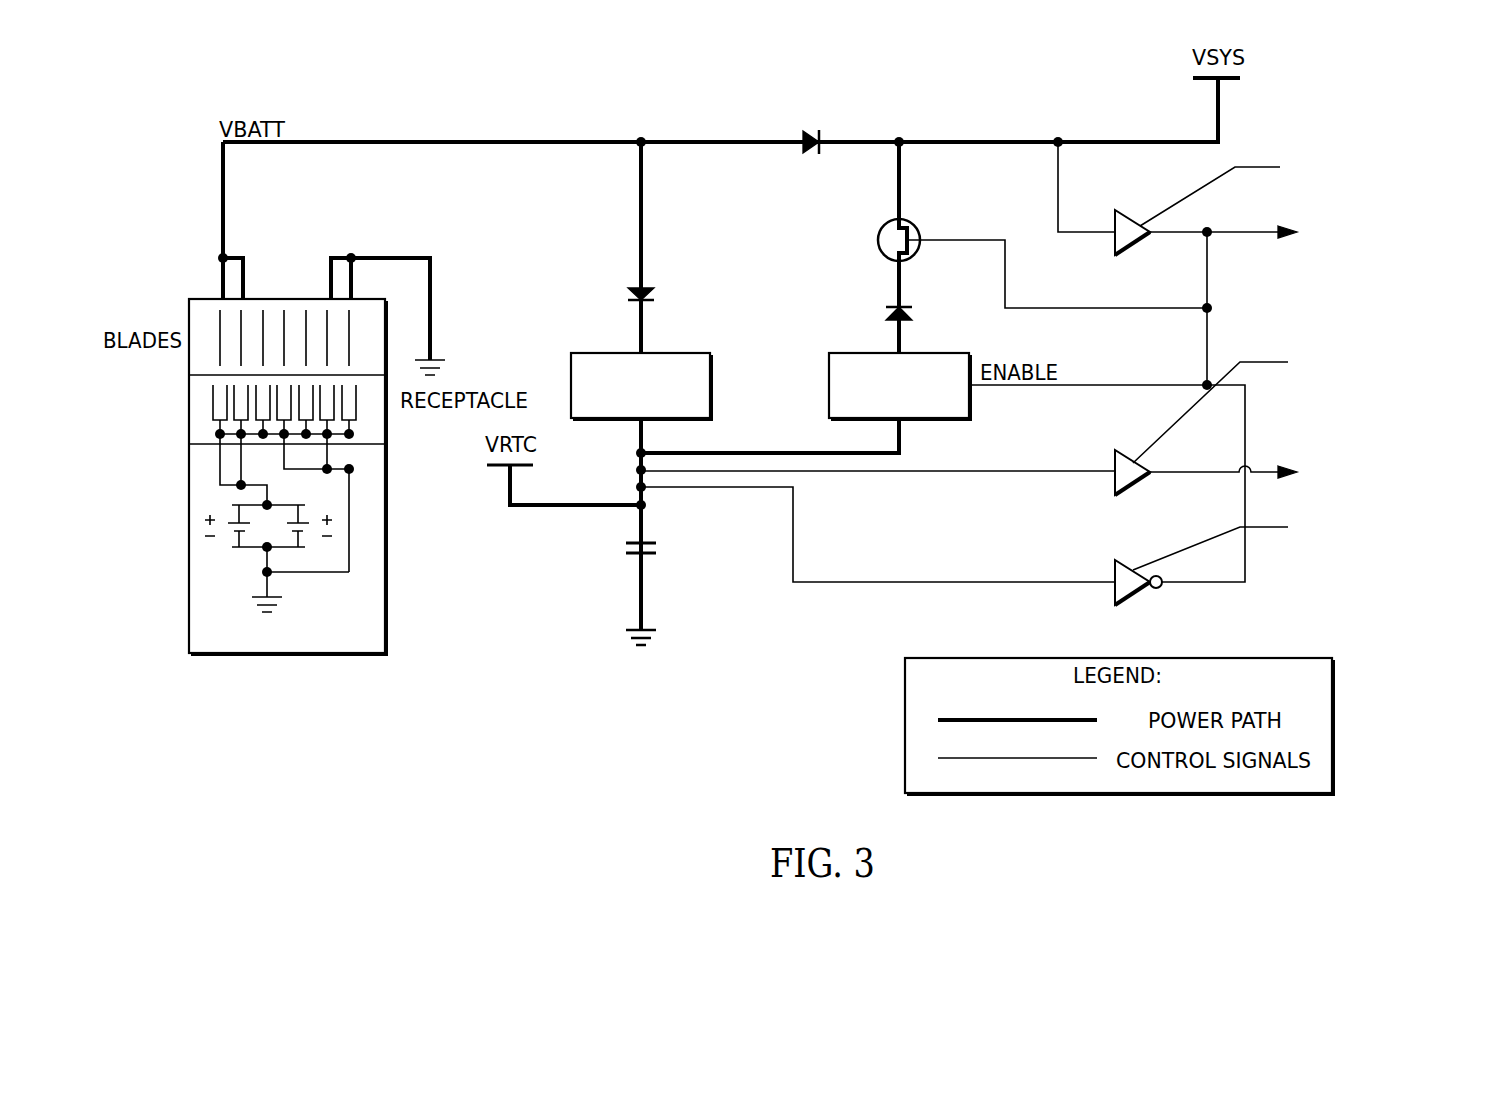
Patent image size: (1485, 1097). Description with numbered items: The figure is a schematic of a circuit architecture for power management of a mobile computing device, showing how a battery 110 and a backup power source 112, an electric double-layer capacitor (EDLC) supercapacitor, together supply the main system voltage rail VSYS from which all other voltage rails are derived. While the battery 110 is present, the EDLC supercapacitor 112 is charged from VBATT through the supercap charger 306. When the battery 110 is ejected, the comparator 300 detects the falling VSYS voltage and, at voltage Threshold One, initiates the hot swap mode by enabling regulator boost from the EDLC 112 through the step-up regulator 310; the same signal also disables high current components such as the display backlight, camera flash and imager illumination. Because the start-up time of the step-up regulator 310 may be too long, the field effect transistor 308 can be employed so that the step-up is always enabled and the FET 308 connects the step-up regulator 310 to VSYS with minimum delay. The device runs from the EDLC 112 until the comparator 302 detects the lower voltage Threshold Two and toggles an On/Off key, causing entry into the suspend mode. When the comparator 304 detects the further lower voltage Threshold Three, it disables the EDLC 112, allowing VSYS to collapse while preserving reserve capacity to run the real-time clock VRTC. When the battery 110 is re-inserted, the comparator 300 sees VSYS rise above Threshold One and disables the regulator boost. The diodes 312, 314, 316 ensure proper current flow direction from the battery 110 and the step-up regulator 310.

The battery 110 is at (387, 478).
The backup power source (EDLC supercapacitor) 112 is at (636, 541).
The comparator 300 is at (1137, 248).
The comparator 302 is at (1139, 488).
The comparator 304 is at (1139, 598).
The supercap charger 306 is at (571, 366).
The field effect transistor (FET) 308 is at (878, 242).
The step-up regulator 310 is at (829, 386).
The diode 312 is at (891, 316).
The diode 314 is at (638, 292).
The diode 316 is at (808, 135).